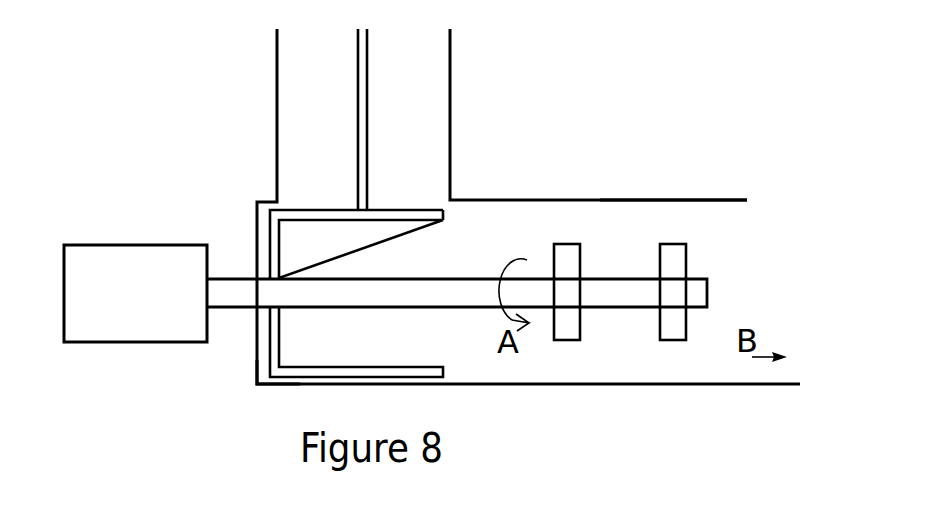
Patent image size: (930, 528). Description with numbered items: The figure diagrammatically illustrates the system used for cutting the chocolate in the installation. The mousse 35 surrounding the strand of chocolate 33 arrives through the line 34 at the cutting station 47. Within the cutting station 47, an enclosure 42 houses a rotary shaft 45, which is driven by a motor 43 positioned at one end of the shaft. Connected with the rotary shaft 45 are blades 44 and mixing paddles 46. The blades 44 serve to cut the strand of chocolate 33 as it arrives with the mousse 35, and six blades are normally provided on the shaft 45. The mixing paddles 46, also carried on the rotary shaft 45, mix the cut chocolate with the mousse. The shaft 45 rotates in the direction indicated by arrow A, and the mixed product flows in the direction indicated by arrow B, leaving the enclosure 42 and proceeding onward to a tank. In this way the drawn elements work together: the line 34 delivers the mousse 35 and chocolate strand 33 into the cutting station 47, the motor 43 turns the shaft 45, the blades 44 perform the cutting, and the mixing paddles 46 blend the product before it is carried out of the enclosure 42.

The strand of chocolate 33 is at (367, 113).
The line 34 is at (452, 67).
The mousse 35 is at (528, 206).
The enclosure 42 is at (643, 200).
The motor 43 is at (135, 293).
The blades 44 is at (420, 220).
The rotary shaft 45 is at (402, 307).
The mixing paddles 46 is at (581, 326).
The cutting station 47 is at (244, 370).